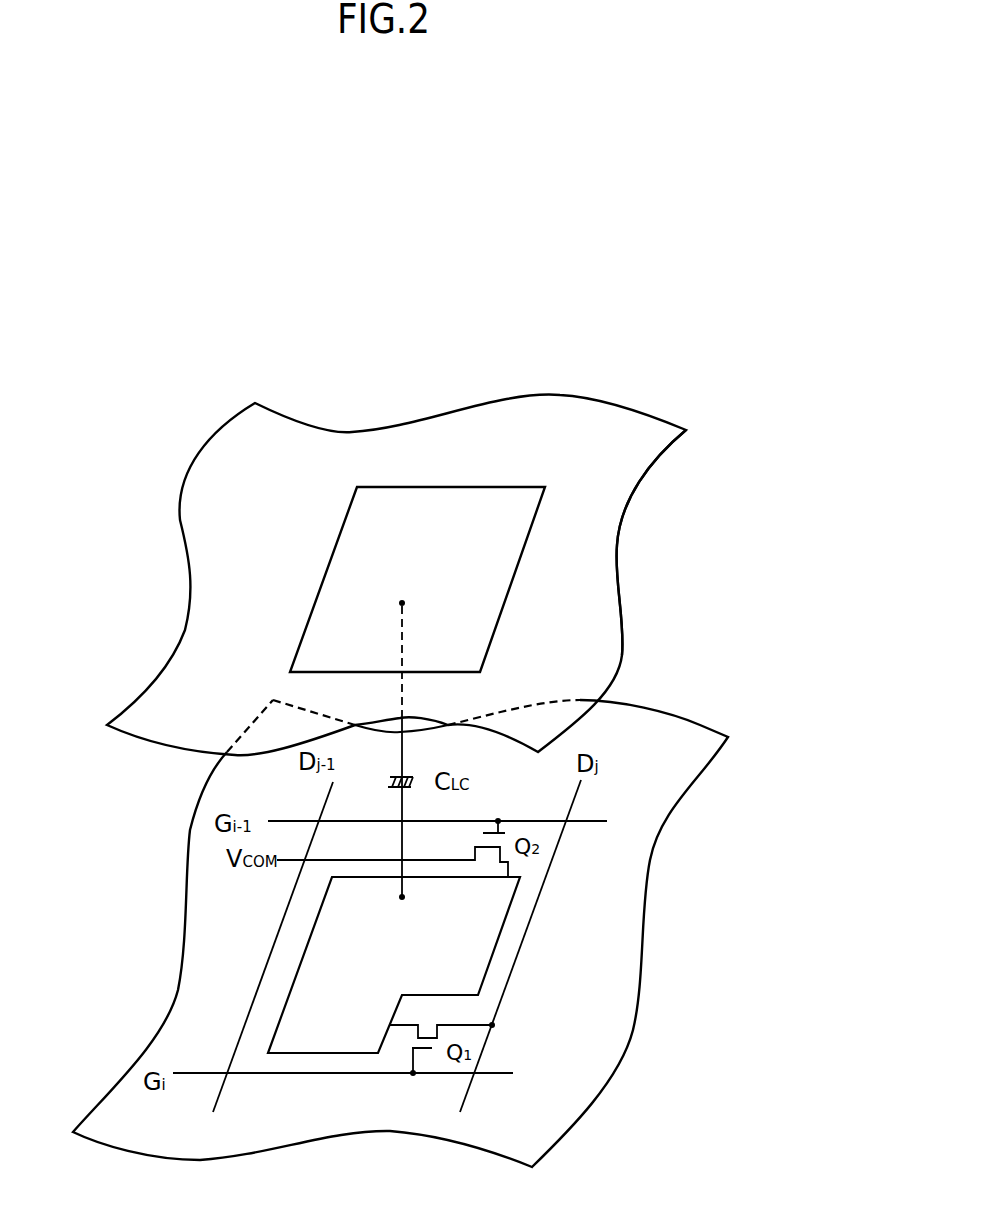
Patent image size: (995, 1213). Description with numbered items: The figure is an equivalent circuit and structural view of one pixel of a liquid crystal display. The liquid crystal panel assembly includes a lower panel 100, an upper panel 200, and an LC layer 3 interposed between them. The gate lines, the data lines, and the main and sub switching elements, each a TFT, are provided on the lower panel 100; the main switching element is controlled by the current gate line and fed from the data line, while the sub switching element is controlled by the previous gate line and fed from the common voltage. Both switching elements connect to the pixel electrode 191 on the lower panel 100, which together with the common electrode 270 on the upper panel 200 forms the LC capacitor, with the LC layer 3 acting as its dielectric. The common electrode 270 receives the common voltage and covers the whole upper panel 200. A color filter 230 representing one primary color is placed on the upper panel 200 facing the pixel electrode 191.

The lower panel 100 is at (649, 930).
The upper panel 200 is at (627, 614).
The LC layer 3 is at (97, 830).
The pixel electrode 191 is at (493, 953).
The color filter 230 is at (505, 608).
The common electrode 270 is at (617, 545).